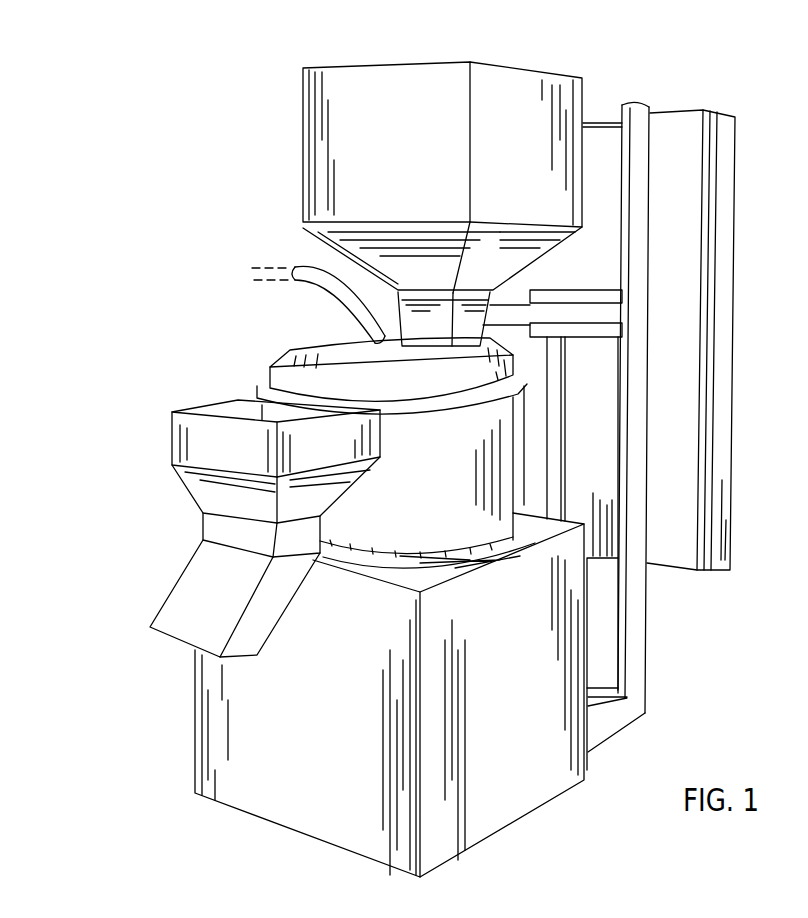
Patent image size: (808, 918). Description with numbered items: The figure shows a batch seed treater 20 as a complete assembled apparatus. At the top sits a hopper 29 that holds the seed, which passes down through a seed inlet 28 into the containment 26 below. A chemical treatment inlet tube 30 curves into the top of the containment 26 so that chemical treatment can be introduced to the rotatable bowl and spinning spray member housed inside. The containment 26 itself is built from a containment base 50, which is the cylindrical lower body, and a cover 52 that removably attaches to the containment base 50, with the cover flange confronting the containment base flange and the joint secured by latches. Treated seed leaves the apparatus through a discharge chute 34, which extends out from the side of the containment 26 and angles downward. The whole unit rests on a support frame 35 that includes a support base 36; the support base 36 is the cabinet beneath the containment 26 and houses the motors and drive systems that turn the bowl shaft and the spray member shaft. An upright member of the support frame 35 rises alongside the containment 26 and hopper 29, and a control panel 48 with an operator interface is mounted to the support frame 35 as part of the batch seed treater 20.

The batch seed treater 20 is at (226, 185).
The containment 26 is at (433, 507).
The seed inlet 28 is at (307, 233).
The hopper 29 is at (415, 75).
The chemical treatment inlet tube 30 is at (340, 303).
The discharge chute 34 is at (205, 575).
The support frame 35 is at (647, 650).
The support base 36 is at (220, 730).
The control panel 48 is at (722, 578).
The containment base 50 is at (457, 459).
The cover 52 is at (287, 348).